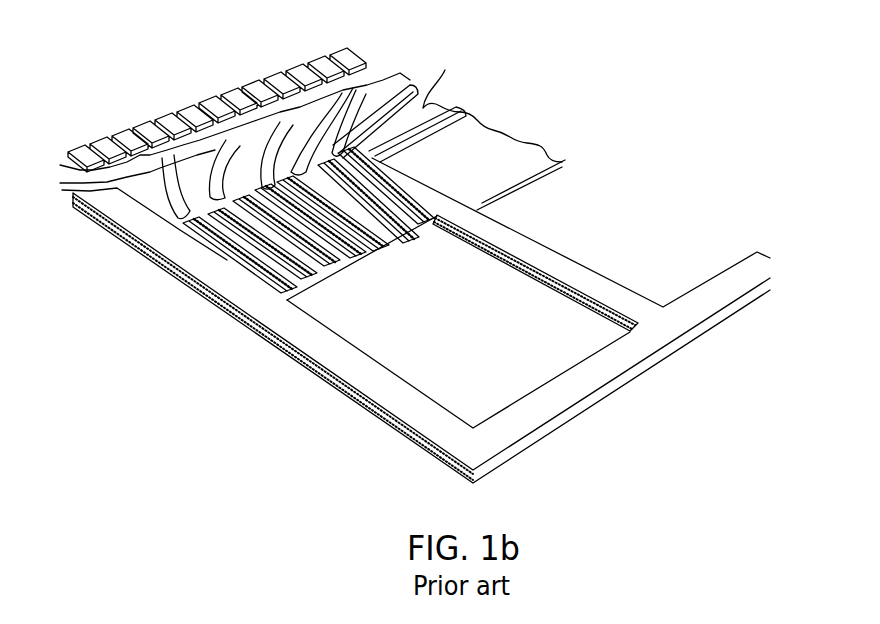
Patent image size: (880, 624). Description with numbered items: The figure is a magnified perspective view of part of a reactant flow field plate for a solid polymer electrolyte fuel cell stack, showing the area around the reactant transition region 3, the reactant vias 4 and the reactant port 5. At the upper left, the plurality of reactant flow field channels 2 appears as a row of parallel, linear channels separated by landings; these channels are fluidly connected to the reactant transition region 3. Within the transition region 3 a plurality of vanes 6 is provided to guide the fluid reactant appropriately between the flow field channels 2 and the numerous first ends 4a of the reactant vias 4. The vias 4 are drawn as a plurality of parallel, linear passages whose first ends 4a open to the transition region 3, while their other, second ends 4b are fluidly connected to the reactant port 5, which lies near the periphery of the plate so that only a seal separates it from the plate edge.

The reactant flow field channels 2 is at (186, 110).
The reactant transition region 3 is at (148, 185).
The reactant vias 4 is at (227, 260).
The first ends of reactant vias 4a is at (183, 227).
The second ends of reactant vias 4b is at (337, 265).
The reactant port 5 is at (530, 363).
The vanes 6 is at (388, 92).